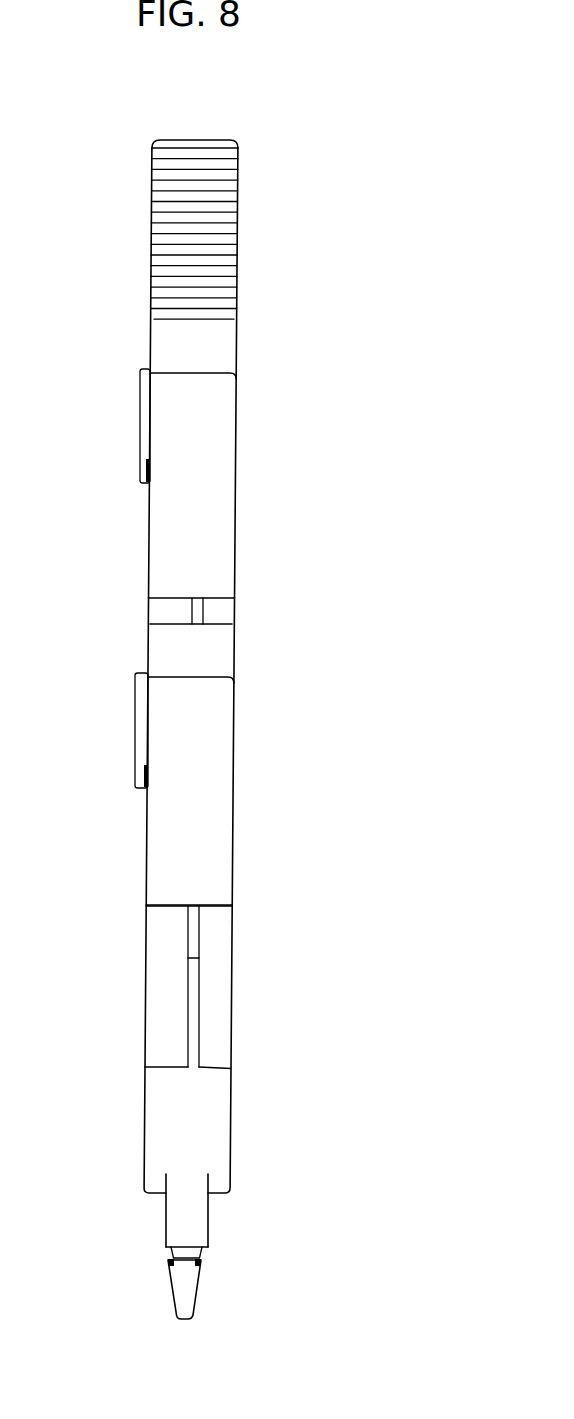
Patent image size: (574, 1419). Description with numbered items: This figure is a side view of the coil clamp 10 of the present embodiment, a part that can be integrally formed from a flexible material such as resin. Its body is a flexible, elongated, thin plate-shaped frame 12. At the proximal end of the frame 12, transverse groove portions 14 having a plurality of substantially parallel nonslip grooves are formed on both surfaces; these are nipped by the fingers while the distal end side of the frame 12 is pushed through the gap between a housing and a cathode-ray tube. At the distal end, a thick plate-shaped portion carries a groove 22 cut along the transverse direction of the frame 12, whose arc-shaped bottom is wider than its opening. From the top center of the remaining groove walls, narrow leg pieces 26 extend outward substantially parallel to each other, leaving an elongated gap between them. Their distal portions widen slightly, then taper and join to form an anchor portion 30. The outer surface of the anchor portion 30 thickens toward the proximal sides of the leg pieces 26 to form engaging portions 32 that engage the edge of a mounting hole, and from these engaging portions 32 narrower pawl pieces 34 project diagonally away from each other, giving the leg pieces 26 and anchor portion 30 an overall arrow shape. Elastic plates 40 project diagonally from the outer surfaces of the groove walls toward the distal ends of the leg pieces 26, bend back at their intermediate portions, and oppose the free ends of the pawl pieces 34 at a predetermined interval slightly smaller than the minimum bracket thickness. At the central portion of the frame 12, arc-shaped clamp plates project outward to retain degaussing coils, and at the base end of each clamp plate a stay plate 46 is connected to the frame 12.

The coil clamp 10 is at (282, 583).
The frame 12 is at (220, 937).
The transverse groove portions 14 is at (228, 243).
The groove 22 is at (208, 1090).
The leg pieces 26 is at (193, 1240).
The anchor portion 30 is at (199, 1298).
The engaging portions 32 is at (201, 1266).
The pawl pieces 34 is at (177, 1243).
The elastic plates 40 is at (200, 1207).
The stay plate 46 is at (193, 997).